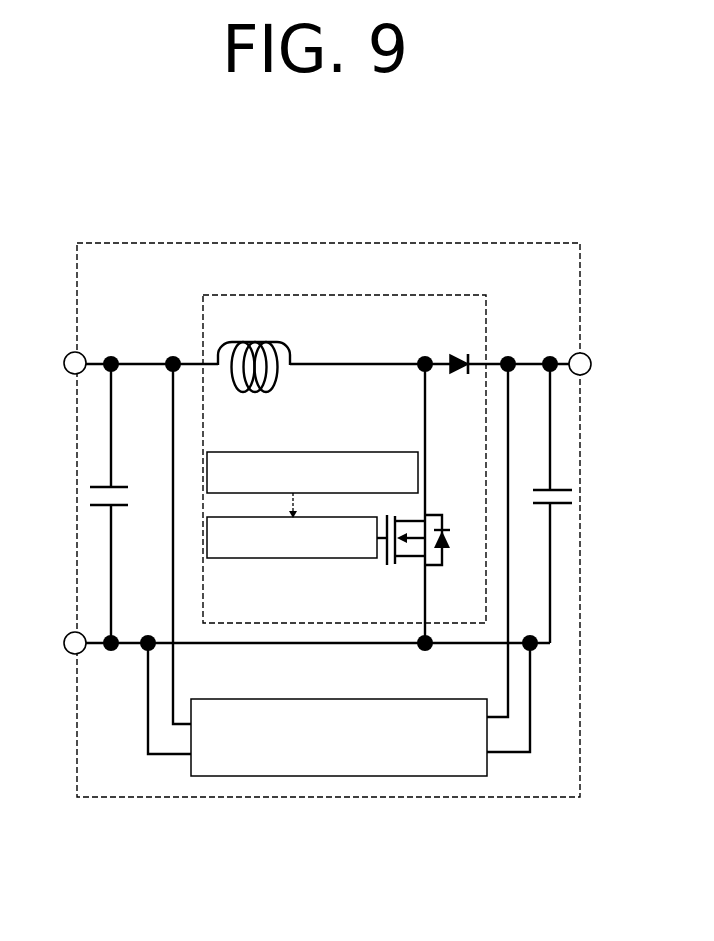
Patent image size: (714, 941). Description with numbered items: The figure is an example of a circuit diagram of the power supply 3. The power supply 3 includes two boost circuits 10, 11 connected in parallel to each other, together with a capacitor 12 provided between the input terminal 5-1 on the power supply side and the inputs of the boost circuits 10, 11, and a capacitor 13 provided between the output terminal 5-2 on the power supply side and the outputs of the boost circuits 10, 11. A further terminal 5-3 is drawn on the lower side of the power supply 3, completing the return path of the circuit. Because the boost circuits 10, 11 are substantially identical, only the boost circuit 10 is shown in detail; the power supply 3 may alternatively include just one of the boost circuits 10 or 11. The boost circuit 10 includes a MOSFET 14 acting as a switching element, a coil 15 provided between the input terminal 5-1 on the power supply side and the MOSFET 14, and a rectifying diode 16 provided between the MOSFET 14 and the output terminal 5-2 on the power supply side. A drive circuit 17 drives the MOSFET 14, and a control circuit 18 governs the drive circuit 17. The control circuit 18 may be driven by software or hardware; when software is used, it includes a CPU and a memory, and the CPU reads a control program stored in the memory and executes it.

The power supply 3 is at (328, 243).
The boost circuit 10 is at (344, 295).
The boost circuit 11 is at (340, 698).
The capacitor 12 is at (103, 484).
The capacitor 13 is at (558, 487).
The MOSFET 14 is at (412, 559).
The coil 15 is at (292, 352).
The rectifying diode 16 is at (455, 355).
The drive circuit 17 is at (291, 560).
The control circuit 18 is at (296, 451).
The input terminal 5-1 is at (67, 353).
The output terminal 5-2 is at (584, 355).
The terminal 5-3 is at (67, 634).